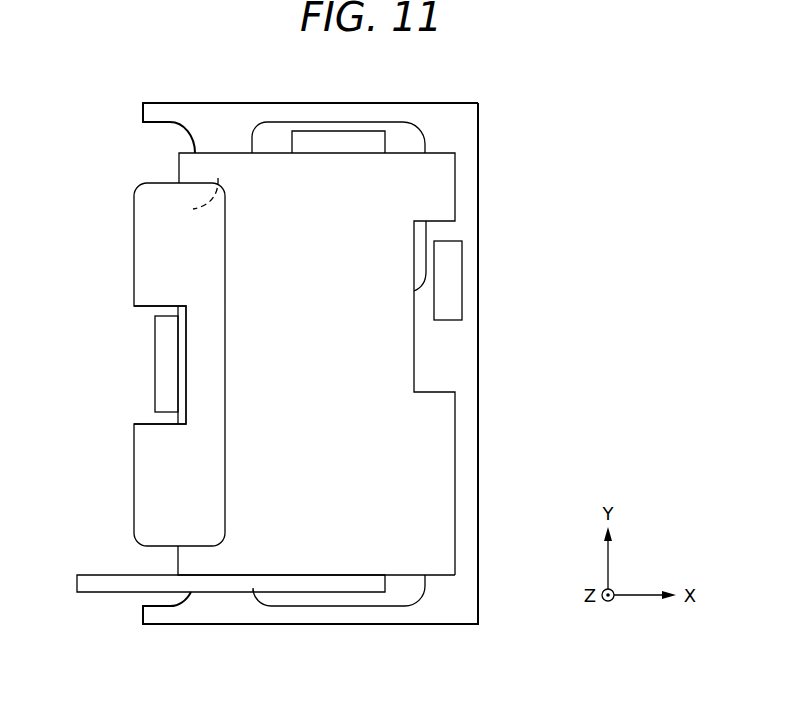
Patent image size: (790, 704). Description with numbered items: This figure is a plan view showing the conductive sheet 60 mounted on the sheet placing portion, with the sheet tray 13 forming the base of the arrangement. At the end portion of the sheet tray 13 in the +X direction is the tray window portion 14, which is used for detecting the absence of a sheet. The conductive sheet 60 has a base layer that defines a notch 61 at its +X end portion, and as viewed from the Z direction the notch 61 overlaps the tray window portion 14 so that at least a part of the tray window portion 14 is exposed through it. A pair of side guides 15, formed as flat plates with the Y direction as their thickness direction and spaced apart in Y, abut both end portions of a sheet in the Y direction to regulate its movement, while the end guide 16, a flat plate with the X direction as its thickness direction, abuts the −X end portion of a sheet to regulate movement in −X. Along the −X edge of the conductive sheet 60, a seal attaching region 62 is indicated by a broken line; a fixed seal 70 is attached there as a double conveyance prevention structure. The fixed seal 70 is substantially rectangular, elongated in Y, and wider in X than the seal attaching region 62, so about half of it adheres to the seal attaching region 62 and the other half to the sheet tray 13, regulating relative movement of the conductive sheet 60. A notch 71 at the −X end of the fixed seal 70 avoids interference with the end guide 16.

The sheet tray 13 is at (453, 125).
The tray window portion 14 is at (435, 283).
The side guide 15 is at (343, 141).
The end guide 16 is at (163, 375).
The conductive sheet 60 is at (268, 183).
The notch 61 is at (432, 223).
The seal attaching region 62 is at (218, 178).
The fixed seal 70 is at (152, 240).
The notch 71 is at (143, 308).